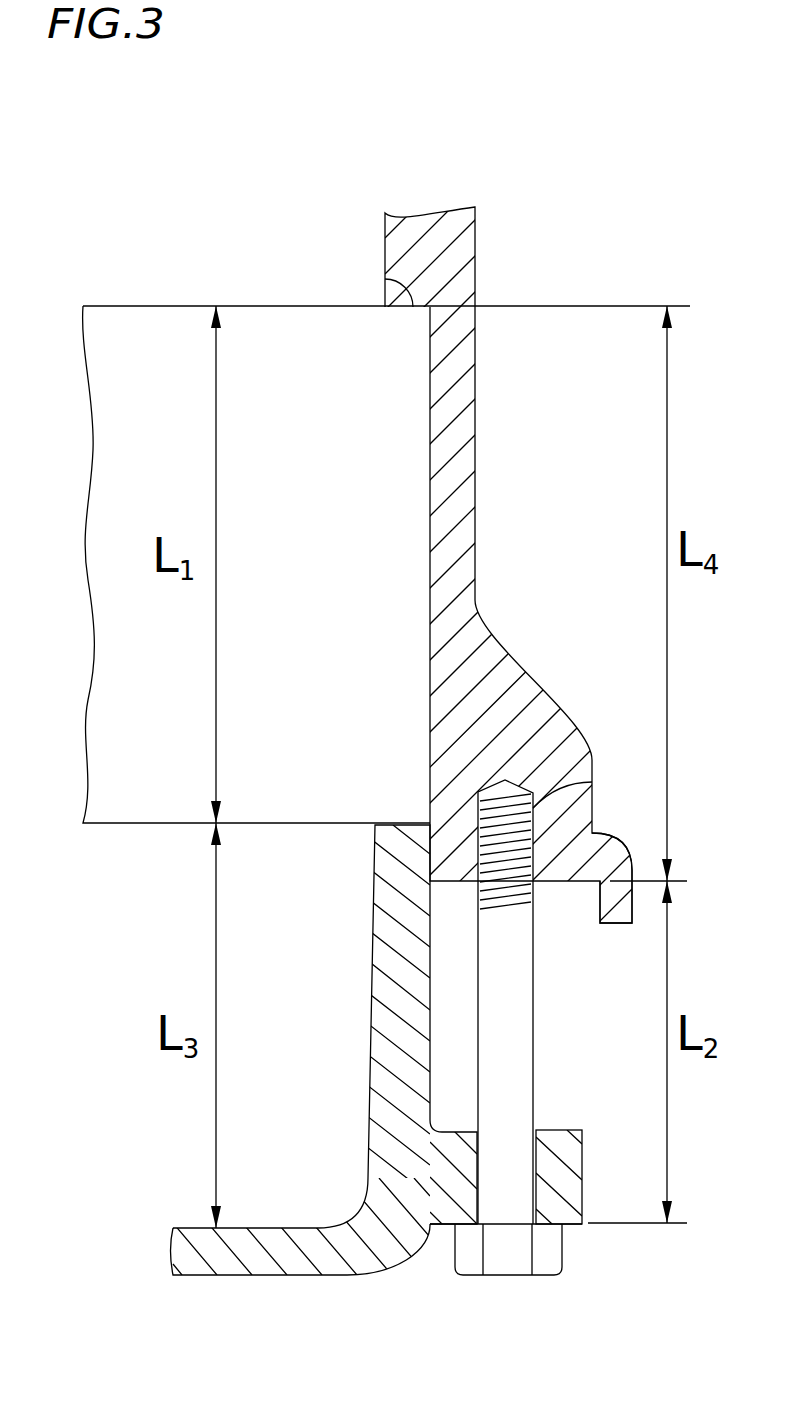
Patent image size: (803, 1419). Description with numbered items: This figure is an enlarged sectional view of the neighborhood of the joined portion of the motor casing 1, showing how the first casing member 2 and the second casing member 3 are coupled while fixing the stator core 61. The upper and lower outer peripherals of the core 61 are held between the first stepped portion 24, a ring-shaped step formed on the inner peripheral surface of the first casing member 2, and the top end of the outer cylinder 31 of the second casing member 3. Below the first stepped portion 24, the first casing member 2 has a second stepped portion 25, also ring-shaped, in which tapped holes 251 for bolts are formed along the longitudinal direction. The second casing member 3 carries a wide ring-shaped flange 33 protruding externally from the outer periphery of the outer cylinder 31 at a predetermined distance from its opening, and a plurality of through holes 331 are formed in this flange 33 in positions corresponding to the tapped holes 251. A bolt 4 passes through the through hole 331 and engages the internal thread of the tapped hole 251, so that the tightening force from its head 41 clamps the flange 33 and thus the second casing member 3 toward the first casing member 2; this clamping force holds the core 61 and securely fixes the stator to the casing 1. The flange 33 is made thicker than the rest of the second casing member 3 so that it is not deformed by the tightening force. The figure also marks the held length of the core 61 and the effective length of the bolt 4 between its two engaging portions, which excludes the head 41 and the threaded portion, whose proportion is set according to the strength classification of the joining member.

The motor casing 1 is at (497, 264).
The first casing member 2 is at (458, 455).
The first stepped portion 24 is at (387, 278).
The second stepped portion 25 is at (570, 881).
The tapped hole 251 is at (591, 780).
The second casing member 3 is at (340, 1263).
The outer cylinder 31 is at (388, 1010).
The through hole 331 is at (472, 1167).
The flange 33 is at (574, 1175).
The bolt 4 is at (517, 1015).
The head 41 is at (516, 1270).
The core 61 is at (307, 338).